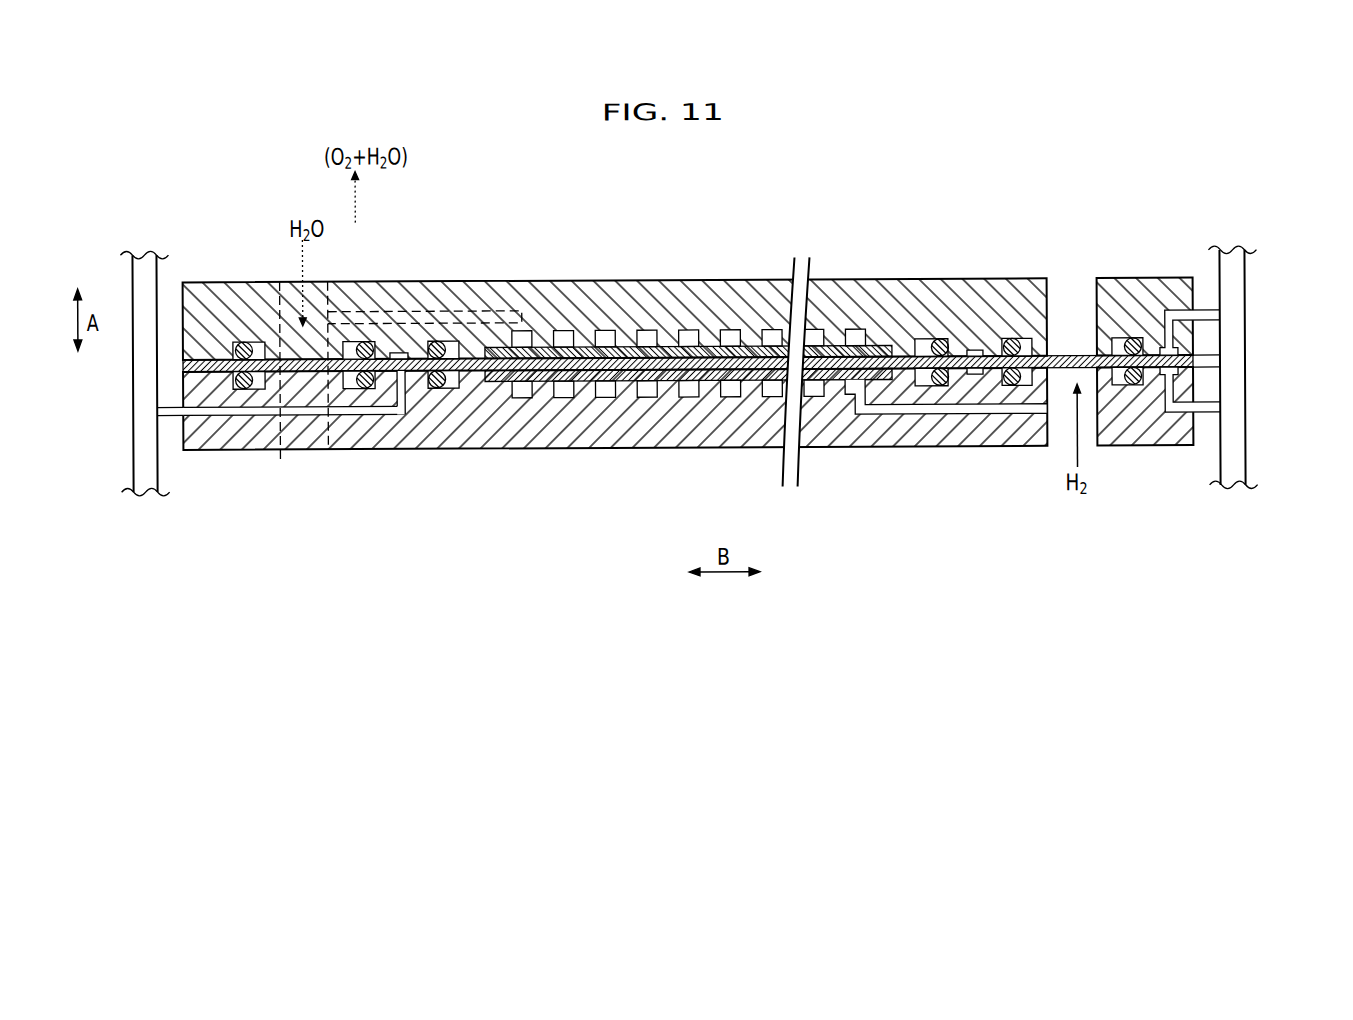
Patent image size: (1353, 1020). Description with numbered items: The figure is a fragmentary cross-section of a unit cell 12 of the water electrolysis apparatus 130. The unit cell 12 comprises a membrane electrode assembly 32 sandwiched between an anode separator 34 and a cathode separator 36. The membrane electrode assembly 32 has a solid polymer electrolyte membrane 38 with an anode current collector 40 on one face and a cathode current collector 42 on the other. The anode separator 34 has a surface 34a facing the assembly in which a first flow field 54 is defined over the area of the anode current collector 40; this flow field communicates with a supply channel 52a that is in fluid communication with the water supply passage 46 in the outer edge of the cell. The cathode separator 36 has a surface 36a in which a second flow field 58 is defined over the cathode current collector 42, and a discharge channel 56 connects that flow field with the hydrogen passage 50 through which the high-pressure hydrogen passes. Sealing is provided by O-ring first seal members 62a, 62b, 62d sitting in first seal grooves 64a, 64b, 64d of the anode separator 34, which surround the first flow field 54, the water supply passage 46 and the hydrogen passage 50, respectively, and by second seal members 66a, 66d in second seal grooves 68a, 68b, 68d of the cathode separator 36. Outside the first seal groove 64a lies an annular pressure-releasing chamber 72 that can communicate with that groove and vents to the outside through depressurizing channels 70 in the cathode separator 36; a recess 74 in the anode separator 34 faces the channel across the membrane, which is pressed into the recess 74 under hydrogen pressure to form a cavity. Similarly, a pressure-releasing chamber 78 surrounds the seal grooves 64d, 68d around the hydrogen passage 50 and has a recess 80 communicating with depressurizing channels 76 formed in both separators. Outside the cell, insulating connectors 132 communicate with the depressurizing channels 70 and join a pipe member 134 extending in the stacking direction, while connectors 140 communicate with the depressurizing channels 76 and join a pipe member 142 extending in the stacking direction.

The unit cell 12 is at (992, 138).
The water electrolysis apparatus 130 is at (688, 370).
The membrane electrode assembly 32 is at (1198, 369).
The anode separator 34 is at (1197, 295).
The surface of the anode separator 34a is at (882, 347).
The cathode separator 36 is at (1199, 449).
The surface of the cathode separator 36a is at (1018, 387).
The solid polymer electrolyte membrane 38 is at (961, 354).
The anode current collector 40 is at (586, 348).
The cathode current collector 42 is at (564, 381).
The water supply passage 46 is at (295, 402).
The hydrogen passage 50 is at (1071, 335).
The supply channel 52a is at (514, 310).
The first flow field 54 is at (692, 337).
The discharge channel 56 is at (902, 414).
The second flow field 58 is at (692, 394).
The first seal member 62a is at (434, 341).
The first seal member 62b is at (247, 341).
The first seal member 62d is at (1008, 351).
The first seal groove 64a is at (456, 346).
The first seal groove 64b is at (349, 341).
The first seal groove 64d is at (1026, 344).
The second seal member 66a is at (438, 387).
The second seal member 66d is at (1139, 372).
The second seal groove 68a is at (454, 381).
The second seal groove 68b is at (349, 386).
The second seal groove 68d is at (1117, 377).
The depressurizing channel 70 is at (239, 412).
The pressure-releasing chamber 72 is at (411, 381).
The recess 74 is at (399, 351).
The depressurizing channel 76 is at (1181, 409).
The pressure-releasing chamber 78 is at (1158, 381).
The recess 80 is at (1195, 325).
The insulating connector 132 is at (170, 405).
The pipe member 134 is at (138, 452).
The connector 140 is at (1213, 403).
The pipe member 142 is at (1231, 439).